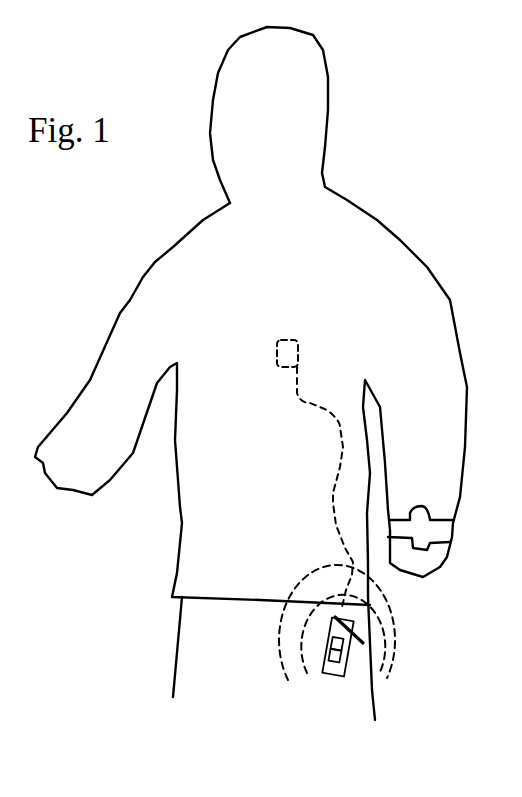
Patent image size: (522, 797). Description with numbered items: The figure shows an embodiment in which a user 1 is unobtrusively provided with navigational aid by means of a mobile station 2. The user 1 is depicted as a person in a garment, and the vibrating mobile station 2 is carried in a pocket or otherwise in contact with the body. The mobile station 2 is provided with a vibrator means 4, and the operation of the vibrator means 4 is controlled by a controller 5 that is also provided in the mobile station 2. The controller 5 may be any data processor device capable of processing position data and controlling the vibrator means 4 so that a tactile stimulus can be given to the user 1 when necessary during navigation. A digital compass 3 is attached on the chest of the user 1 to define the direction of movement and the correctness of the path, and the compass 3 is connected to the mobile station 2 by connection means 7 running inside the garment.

The garment 1 is at (157, 262).
The cable 2 is at (345, 657).
The loudspeaker/microphone unit 3 is at (276, 349).
The connector 4 is at (337, 667).
The cable 5 is at (330, 650).
The cable conductor in garment 7 is at (333, 503).